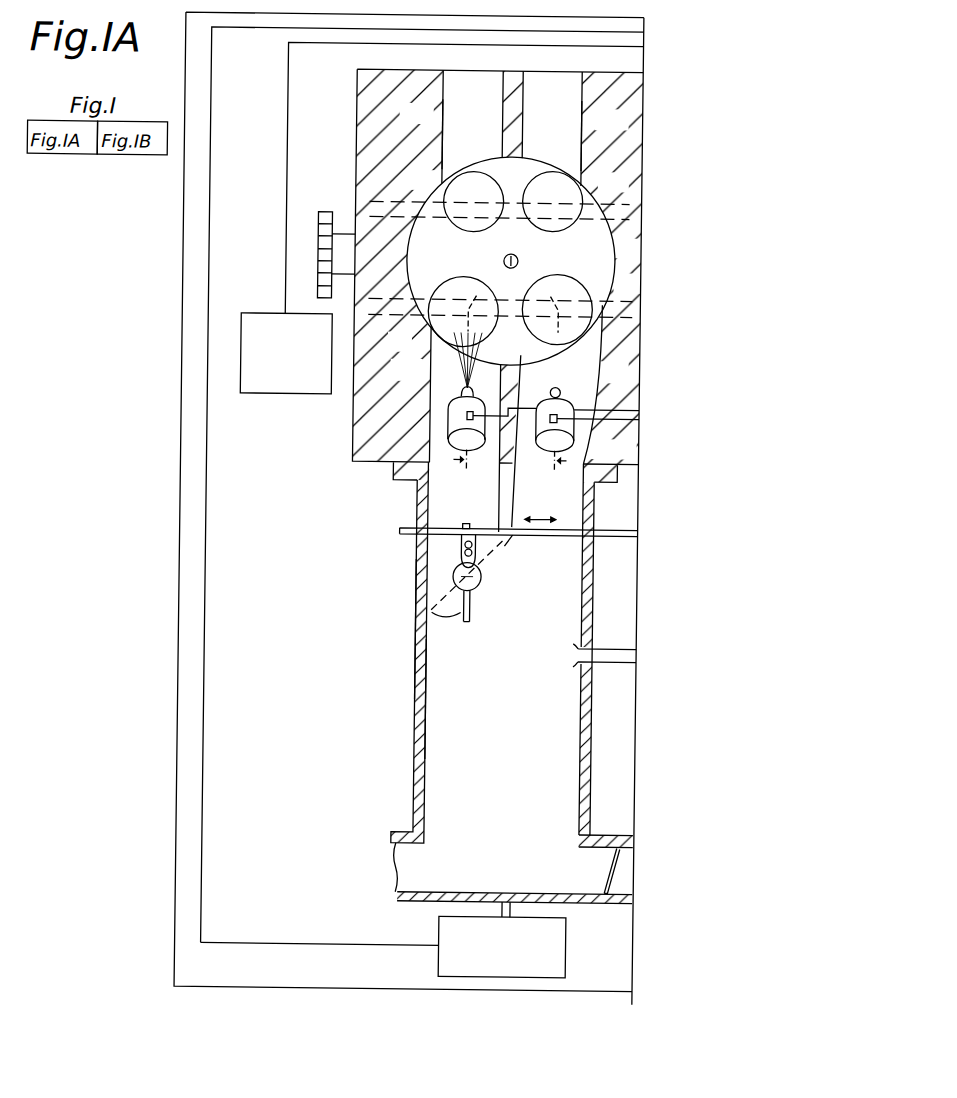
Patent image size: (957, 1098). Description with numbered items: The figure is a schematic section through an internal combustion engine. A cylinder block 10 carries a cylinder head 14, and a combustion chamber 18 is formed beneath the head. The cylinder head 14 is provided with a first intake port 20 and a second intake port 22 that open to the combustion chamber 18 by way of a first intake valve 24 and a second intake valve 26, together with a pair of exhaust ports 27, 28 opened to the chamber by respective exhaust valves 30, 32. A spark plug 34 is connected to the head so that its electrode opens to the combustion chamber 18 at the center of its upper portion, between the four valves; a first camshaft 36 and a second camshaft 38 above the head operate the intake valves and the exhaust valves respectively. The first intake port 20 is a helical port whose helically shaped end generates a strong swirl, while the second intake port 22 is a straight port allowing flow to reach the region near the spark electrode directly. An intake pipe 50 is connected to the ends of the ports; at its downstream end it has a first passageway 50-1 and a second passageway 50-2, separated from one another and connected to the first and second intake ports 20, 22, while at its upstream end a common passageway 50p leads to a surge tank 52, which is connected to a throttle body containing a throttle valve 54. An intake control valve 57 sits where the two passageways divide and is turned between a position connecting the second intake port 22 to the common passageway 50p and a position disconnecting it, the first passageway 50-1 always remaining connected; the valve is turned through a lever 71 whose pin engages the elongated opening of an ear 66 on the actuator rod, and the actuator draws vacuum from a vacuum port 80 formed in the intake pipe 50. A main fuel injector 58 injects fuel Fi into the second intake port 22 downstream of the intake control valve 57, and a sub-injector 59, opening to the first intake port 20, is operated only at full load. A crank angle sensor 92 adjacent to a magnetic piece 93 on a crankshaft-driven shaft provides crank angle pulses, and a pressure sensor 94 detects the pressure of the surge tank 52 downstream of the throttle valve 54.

The cylinder block 10 is at (352, 440).
The cylinder head 14 is at (352, 113).
The combustion chamber 18 is at (485, 268).
The first intake port 20 is at (572, 368).
The second intake port 22 is at (433, 370).
The first intake valve 24 is at (558, 290).
The second intake valve 26 is at (450, 290).
The exhaust port 27 is at (572, 117).
The exhaust port 28 is at (438, 113).
The exhaust valve 30 is at (563, 196).
The exhaust valve 32 is at (460, 192).
The spark plug 34 is at (515, 261).
The first camshaft 36 is at (614, 302).
The second camshaft 38 is at (618, 222).
The fuel injection spray Fi is at (429, 342).
The intake pipe 50 is at (417, 630).
The first passageway 50-1 is at (585, 480).
The second passageway 50-2 is at (447, 490).
The common passageway 50p is at (443, 694).
The surge tank 52 is at (575, 903).
The throttle valve 54 is at (612, 868).
The intake control valve 57 is at (474, 610).
The main fuel injector 58 is at (385, 467).
The sub-injector 59 is at (583, 483).
The ear 66 is at (465, 524).
The lever 71 is at (482, 583).
The vacuum port 80 is at (578, 656).
The crank angle sensor 92 is at (285, 396).
The magnetic piece 93 is at (322, 214).
The pressure sensor 94 is at (444, 928).